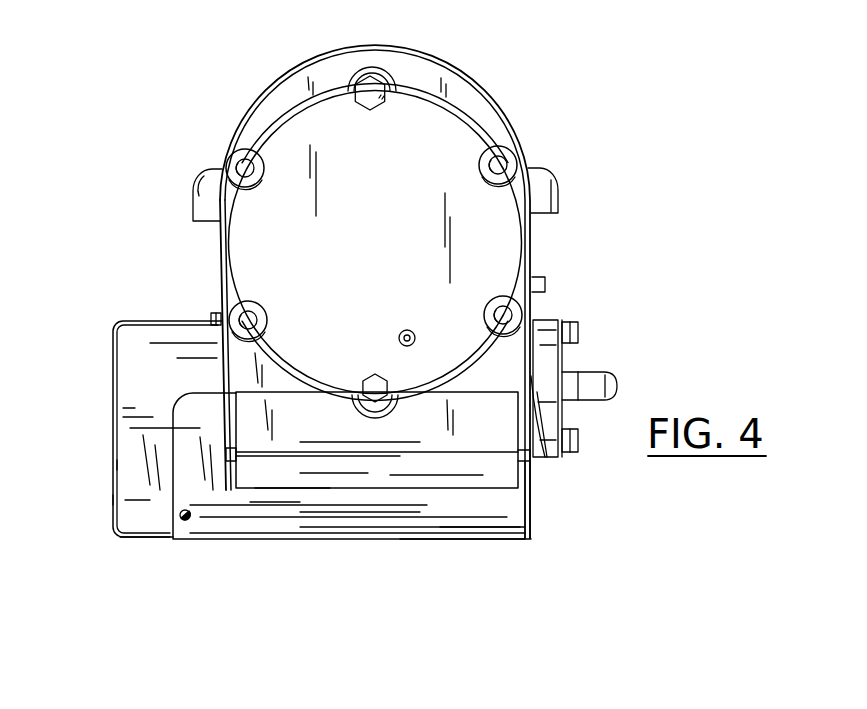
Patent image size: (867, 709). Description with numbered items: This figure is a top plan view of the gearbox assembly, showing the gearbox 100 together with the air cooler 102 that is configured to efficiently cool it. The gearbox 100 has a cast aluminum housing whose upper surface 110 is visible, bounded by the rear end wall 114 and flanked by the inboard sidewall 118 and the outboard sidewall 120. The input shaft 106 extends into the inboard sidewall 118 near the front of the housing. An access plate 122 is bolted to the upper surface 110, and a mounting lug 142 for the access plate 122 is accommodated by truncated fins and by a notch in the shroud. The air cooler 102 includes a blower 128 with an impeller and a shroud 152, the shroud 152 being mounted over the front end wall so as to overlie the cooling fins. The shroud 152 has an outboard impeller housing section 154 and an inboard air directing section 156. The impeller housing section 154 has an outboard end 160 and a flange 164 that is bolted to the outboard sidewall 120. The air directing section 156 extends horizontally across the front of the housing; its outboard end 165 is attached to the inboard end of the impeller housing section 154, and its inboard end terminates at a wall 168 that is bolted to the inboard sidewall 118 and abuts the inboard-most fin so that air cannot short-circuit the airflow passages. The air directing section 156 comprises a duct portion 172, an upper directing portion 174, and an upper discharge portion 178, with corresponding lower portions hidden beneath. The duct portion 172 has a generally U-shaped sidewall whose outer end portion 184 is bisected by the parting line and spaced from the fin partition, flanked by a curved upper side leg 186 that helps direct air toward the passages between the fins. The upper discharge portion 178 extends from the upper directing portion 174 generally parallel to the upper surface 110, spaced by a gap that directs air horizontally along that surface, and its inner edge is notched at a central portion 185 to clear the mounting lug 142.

The gearbox 100 is at (496, 95).
The air cooler 102 is at (152, 543).
The input shaft 106 is at (600, 387).
The upper surface 110 is at (307, 79).
The rear end wall 114 is at (378, 46).
The inboard sidewall 118 is at (537, 268).
The outboard sidewall 120 is at (220, 250).
The access plate 122 is at (458, 264).
The blower 128 is at (113, 463).
The mounting lug 142 is at (523, 155).
The shroud 152 is at (523, 508).
The impeller housing section 154 is at (135, 356).
The air directing section 156 is at (476, 529).
The outboard end 160 is at (112, 500).
The flange 164 is at (220, 308).
The outboard end 165 is at (172, 522).
The wall 168 is at (527, 476).
The duct portion 172 is at (358, 531).
The upper directing portion 174 is at (293, 474).
The upper discharge portion 178 is at (500, 425).
The outer end portion 184 is at (460, 539).
The central portion 185 is at (340, 404).
The upper side leg 186 is at (398, 500).